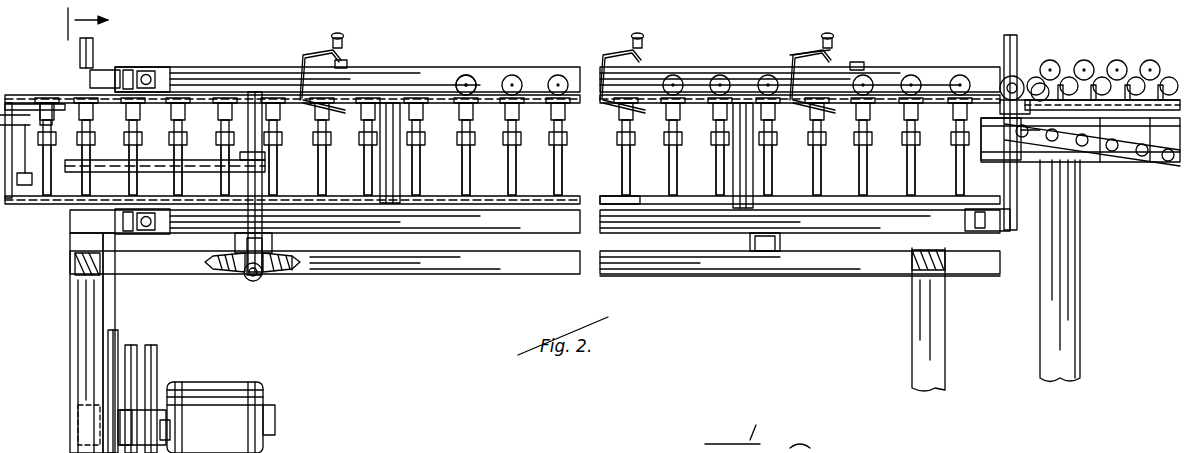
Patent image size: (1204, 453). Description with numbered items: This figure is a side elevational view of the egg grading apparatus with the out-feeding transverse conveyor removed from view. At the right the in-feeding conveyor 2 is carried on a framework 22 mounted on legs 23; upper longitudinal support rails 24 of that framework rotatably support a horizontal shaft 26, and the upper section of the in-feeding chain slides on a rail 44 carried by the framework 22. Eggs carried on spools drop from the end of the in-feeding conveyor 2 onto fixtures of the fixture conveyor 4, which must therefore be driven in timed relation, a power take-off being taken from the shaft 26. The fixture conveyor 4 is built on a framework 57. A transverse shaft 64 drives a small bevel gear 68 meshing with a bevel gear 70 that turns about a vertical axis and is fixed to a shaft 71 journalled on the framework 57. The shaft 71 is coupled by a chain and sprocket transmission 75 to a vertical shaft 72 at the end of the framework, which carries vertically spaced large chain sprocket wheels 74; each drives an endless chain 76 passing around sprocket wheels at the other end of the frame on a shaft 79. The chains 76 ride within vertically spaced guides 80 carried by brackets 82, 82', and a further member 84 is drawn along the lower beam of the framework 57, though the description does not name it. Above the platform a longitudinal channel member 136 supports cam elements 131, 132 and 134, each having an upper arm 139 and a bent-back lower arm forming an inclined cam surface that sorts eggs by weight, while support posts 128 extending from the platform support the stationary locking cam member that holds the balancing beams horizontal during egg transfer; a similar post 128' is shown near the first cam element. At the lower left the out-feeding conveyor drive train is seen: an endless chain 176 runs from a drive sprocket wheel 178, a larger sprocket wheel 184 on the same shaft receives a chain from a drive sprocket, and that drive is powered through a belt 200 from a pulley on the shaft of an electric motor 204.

The in-feeding conveyor 2 is at (1110, 50).
The fixture conveyor 4 is at (75, 24).
The framework 22 is at (1112, 162).
The legs 23 is at (1075, 275).
The upper longitudinal support rails 24 is at (992, 160).
The horizontal shaft 26 is at (1018, 85).
The rail 44 is at (1148, 140).
The framework 57 is at (880, 272).
The transverse shaft 64 is at (246, 275).
The small bevel gear 68 is at (254, 282).
The bevel gear 70 is at (292, 276).
The shaft 71 is at (262, 130).
The vertical shaft 72 is at (92, 52).
The large chain sprocket wheels 74 is at (58, 203).
The chain and sprocket transmission 75 is at (200, 158).
The endless chain 76 is at (23, 93).
The shaft 79 is at (1003, 45).
The guide 80 is at (575, 197).
The bracket 82 is at (540, 262).
The bracket 82' is at (581, 99).
The lower beam 84 is at (522, 232).
The support post 128 is at (891, 52).
The bolt 128' is at (358, 46).
The cam element 131 is at (788, 50).
The cam element 132 is at (628, 31).
The cam element 134 is at (310, 58).
The longitudinal channel member 136 is at (422, 68).
The upper arm 139 is at (812, 50).
The endless chain 176 is at (105, 309).
The drive sprocket wheel 178 is at (100, 434).
The larger sprocket wheel 184 is at (128, 360).
The belt 200 is at (155, 362).
The electric motor 204 is at (228, 395).